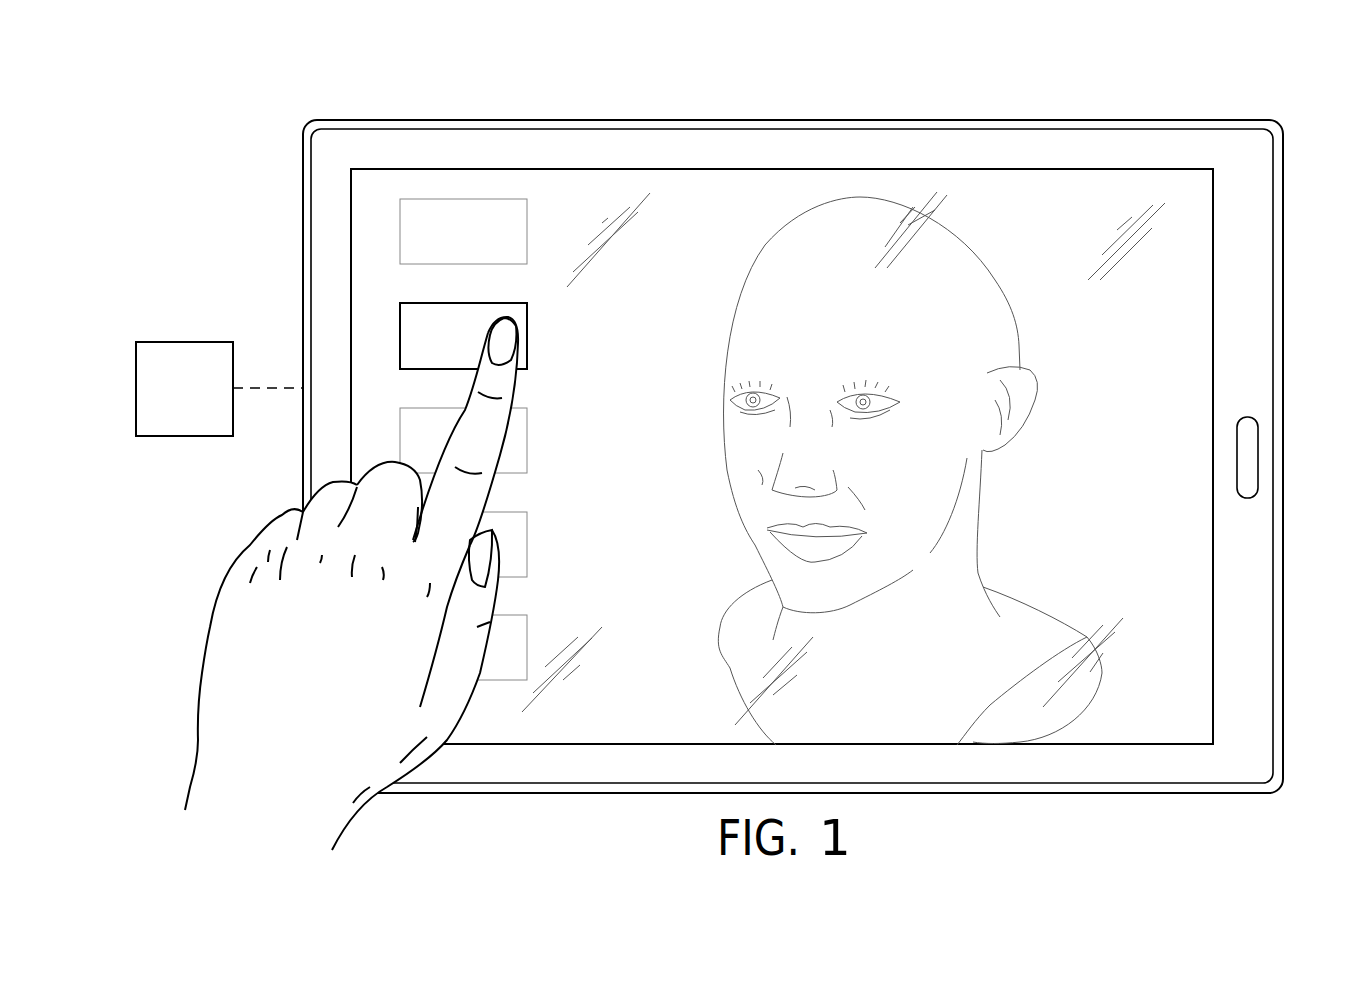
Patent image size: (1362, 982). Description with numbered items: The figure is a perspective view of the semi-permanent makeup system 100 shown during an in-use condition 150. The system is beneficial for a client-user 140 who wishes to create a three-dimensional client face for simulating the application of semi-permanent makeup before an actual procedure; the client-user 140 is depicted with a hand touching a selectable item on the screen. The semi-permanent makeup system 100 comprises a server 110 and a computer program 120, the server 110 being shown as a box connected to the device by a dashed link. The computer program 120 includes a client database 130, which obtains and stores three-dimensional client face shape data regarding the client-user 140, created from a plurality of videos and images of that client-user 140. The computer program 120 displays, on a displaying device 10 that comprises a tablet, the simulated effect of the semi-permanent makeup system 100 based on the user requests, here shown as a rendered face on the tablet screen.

The displaying device 10 is at (1283, 227).
The semi-permanent makeup system 100 is at (268, 132).
The server 110 is at (208, 401).
The computer program 120 is at (240, 172).
The client database 130 is at (208, 213).
The client-user 140 is at (218, 633).
The in-use condition 150 is at (178, 257).